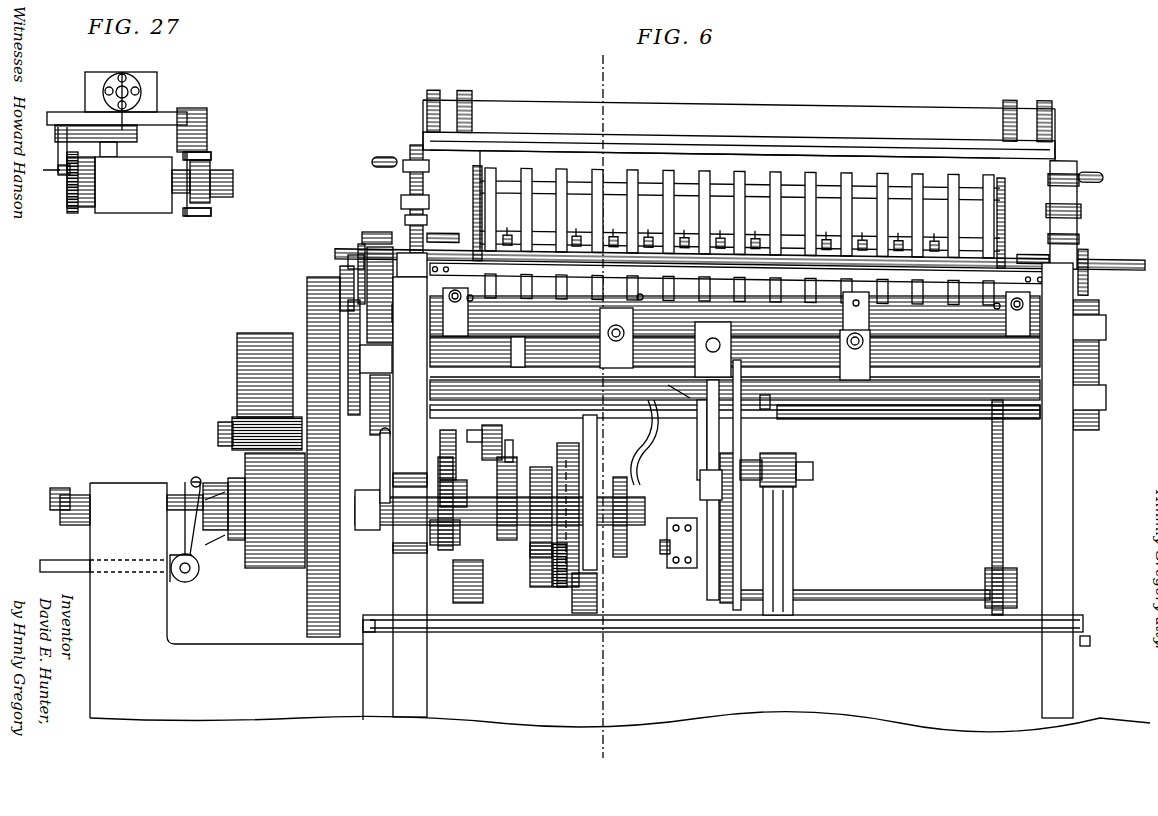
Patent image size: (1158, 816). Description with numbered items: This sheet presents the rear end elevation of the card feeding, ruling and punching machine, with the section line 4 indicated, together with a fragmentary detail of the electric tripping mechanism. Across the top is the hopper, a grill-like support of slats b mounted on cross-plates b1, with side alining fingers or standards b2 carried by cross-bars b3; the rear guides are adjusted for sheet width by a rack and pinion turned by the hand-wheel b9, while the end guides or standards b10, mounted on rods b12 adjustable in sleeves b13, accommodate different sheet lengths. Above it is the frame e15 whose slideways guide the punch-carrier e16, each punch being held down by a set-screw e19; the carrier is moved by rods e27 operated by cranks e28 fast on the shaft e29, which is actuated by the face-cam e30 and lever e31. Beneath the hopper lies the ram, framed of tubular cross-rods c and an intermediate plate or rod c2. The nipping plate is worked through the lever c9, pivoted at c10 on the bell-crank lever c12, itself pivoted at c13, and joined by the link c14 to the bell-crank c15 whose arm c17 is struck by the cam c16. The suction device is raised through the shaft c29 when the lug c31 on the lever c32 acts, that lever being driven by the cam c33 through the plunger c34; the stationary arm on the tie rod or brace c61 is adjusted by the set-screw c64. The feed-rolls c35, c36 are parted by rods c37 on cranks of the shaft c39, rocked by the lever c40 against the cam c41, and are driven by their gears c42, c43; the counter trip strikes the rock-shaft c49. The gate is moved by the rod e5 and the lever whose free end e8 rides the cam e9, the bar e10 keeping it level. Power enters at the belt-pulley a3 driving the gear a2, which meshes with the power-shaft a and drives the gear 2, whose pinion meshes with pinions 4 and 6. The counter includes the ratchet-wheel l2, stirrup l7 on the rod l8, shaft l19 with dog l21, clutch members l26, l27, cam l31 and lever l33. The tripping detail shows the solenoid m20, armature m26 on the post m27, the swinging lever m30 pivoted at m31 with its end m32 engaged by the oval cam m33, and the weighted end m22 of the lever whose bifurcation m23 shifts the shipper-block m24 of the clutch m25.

In FIG. 6, the pinion 4 is at (599, 407).
In FIG. 6, the frame e15 is at (728, 101).
In FIG. 6, the punch-carrier e16 is at (734, 185).
In FIG. 6, the end guides or standards b10 is at (473, 196).
In FIG. 6, the side alining fingers or standards b2 is at (560, 210).
In FIG. 6, the set-screw e19 is at (577, 228).
In FIG. 6, the slats b is at (725, 290).
In FIG. 6, the cross-plates b1 is at (783, 290).
In FIG. 6, the cross-bars b3 is at (905, 272).
In FIG. 6, the feed-roll c35 is at (436, 292).
In FIG. 6, the feed-roll c36 is at (460, 276).
In FIG. 6, the sleeves b13 is at (455, 233).
In FIG. 6, the rods b12 is at (354, 250).
In FIG. 6, the hand-wheel b9 is at (1089, 274).
In FIG. 6, the pinion 6 is at (380, 233).
In FIG. 6, the rock-shaft c49 is at (361, 244).
In FIG. 6, the lever block l is at (348, 262).
In FIG. 6, the gear c42 is at (392, 289).
In FIG. 6, the gear c43 is at (400, 313).
In FIG. 27, the power-shaft a is at (233, 183).
In FIG. 6, the power-shaft a is at (309, 606).
In FIG. 6, the ratchet-wheel l2 is at (307, 300).
In FIG. 6, the gear 2 is at (308, 290).
In FIG. 6, the belt-pulley a3 is at (270, 333).
In FIG. 6, the rods c37 is at (348, 335).
In FIG. 6, the gear a2 is at (307, 362).
In FIG. 6, the stirrup l7 is at (307, 376).
In FIG. 6, the rod l8 is at (307, 393).
In FIG. 6, the cam l31 is at (420, 556).
In FIG. 6, the cross-rods c is at (518, 318).
In FIG. 6, the intermediate plate or rod c2 is at (746, 312).
In FIG. 6, the lug c31 is at (712, 338).
In FIG. 6, the lever c32 is at (512, 348).
In FIG. 6, the shaft c29 is at (566, 342).
In FIG. 6, the tie rod or brace c61 is at (888, 398).
In FIG. 6, the shaft c39 is at (905, 422).
In FIG. 6, the rods e27 is at (992, 486).
In FIG. 6, the shaft e29 is at (895, 590).
In FIG. 6, the cranks e28 is at (1017, 580).
In FIG. 27, the oval cam m33 is at (72, 205).
In FIG. 6, the oval cam m33 is at (80, 495).
In FIG. 27, the end of swinging lever m32 is at (58, 170).
In FIG. 6, the end of swinging lever m32 is at (52, 490).
In FIG. 27, the weighted end m22 is at (75, 116).
In FIG. 6, the weighted end m22 is at (42, 567).
In FIG. 27, the shipper-block m24 is at (206, 170).
In FIG. 6, the shipper-block m24 is at (205, 498).
In FIG. 6, the friction or other clutch m25 is at (228, 500).
In FIG. 6, the pivot m31 is at (200, 578).
In FIG. 6, the dog l21 is at (382, 486).
In FIG. 6, the shaft l19 is at (391, 432).
In FIG. 6, the lever l33 is at (435, 462).
In FIG. 6, the clutch member l27 is at (449, 484).
In FIG. 6, the clutch member l26 is at (384, 535).
In FIG. 6, the rod e5 is at (502, 437).
In FIG. 6, the plunger c34 is at (510, 448).
In FIG. 6, the cam c33 is at (505, 492).
In FIG. 6, the cam e9 is at (540, 492).
In FIG. 6, the face-cam e30 is at (580, 466).
In FIG. 6, the bar e10 is at (585, 432).
In FIG. 6, the free end of lever e8 is at (540, 575).
In FIG. 6, the lever e31 is at (584, 596).
In FIG. 6, the cam c41 is at (617, 540).
In FIG. 6, the pivot c10 is at (676, 392).
In FIG. 6, the lever c9 is at (698, 436).
In FIG. 6, the lever c40 is at (648, 455).
In FIG. 6, the cam c16 is at (716, 472).
In FIG. 6, the link c14 is at (712, 488).
In FIG. 6, the bell-crank c15 is at (690, 530).
In FIG. 6, the arm c17 is at (667, 560).
In FIG. 6, the bell-crank lever c12 is at (742, 450).
In FIG. 6, the pivot c13 is at (815, 471).
In FIG. 6, the set-screw c64 is at (764, 409).
In FIG. 27, the post m27 is at (131, 84).
In FIG. 27, the armature m26 is at (110, 82).
In FIG. 27, the solenoid m20 is at (145, 102).
In FIG. 27, the swinging lever m30 is at (137, 133).
In FIG. 27, the bifurcated portion m23 is at (210, 155).